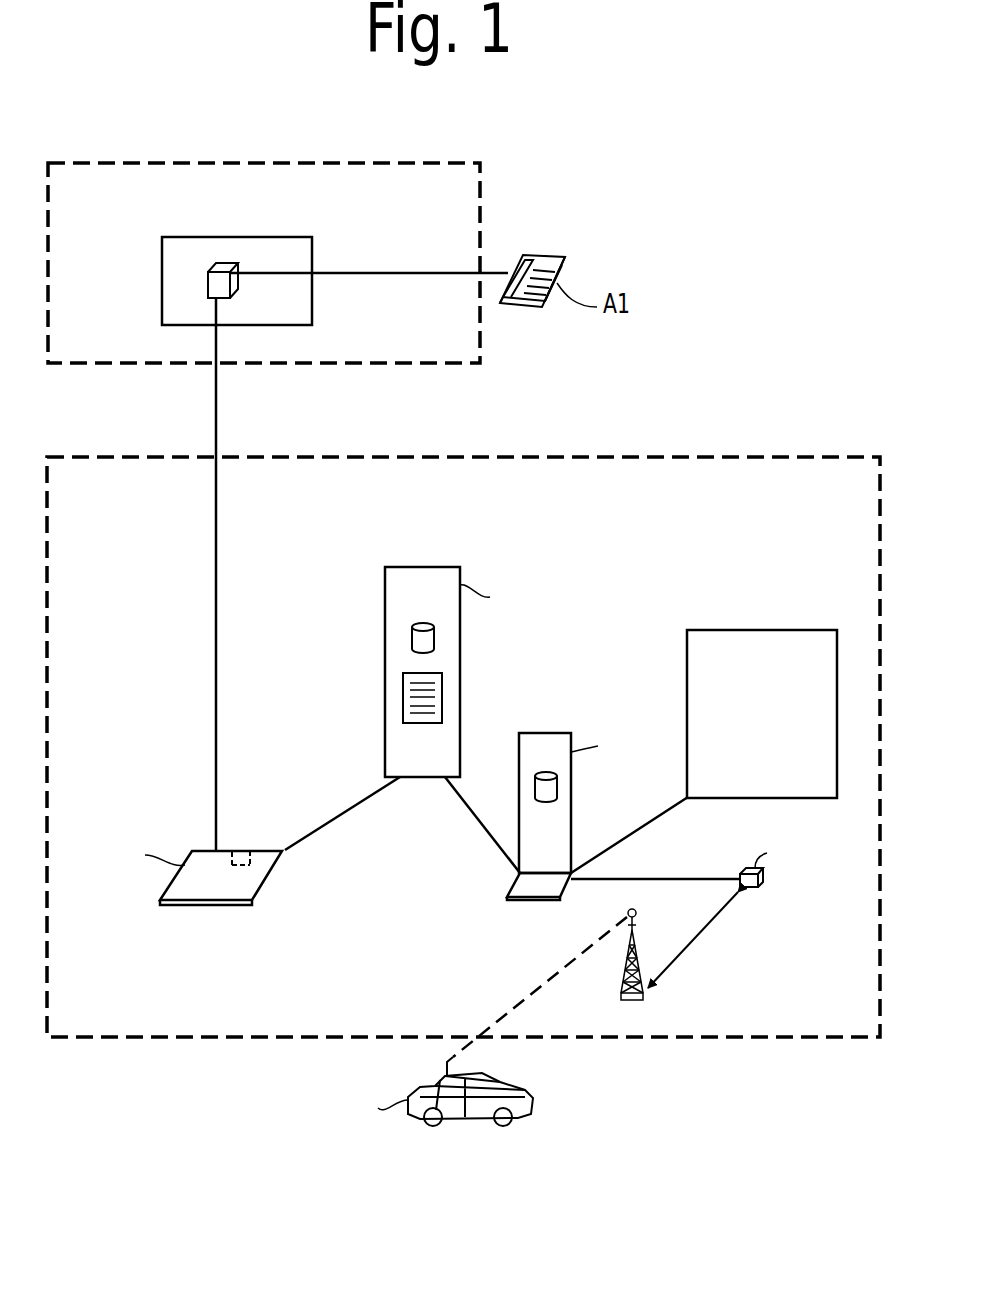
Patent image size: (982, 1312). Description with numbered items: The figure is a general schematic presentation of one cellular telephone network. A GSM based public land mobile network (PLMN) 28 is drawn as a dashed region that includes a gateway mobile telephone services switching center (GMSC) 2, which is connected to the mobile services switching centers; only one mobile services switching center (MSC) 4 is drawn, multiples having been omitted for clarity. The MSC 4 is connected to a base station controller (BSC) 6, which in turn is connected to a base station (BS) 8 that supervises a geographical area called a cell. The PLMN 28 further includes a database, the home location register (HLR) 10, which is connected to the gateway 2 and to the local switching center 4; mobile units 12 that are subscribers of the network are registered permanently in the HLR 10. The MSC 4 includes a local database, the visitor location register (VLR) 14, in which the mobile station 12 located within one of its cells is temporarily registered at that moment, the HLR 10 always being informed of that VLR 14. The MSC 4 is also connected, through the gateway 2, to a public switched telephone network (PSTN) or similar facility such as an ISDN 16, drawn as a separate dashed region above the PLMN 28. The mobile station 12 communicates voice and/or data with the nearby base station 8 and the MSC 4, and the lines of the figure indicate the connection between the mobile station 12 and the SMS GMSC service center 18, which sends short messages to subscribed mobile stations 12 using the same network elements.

The gateway mobile telephone services switching center 2 is at (213, 885).
The mobile services switching center 4 is at (530, 905).
The base station controller 6 is at (763, 880).
The base station 8 is at (637, 998).
The home location register 10 is at (442, 578).
The mobile station 12 is at (518, 1115).
The visitor location register 14 is at (553, 742).
The public switched telephone network 16 is at (185, 365).
The SMS GMSC service center 18 is at (750, 630).
The public land mobile network 28 is at (827, 456).